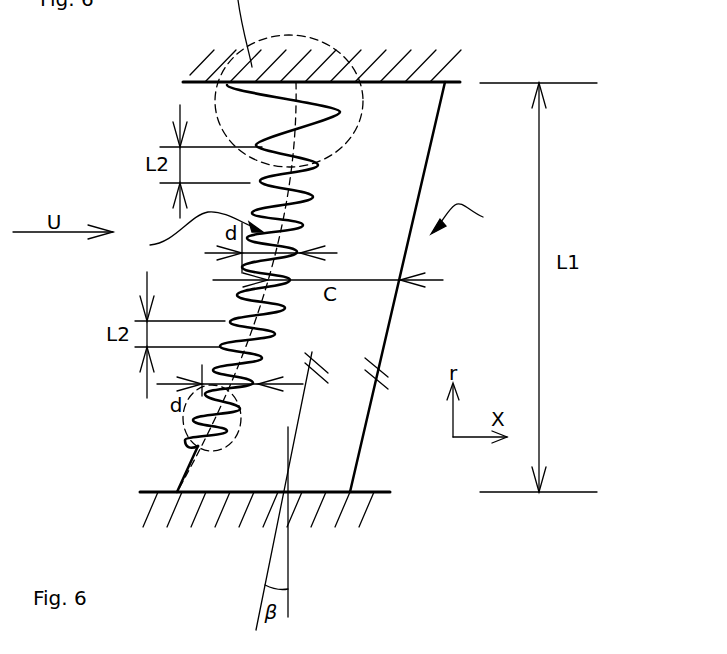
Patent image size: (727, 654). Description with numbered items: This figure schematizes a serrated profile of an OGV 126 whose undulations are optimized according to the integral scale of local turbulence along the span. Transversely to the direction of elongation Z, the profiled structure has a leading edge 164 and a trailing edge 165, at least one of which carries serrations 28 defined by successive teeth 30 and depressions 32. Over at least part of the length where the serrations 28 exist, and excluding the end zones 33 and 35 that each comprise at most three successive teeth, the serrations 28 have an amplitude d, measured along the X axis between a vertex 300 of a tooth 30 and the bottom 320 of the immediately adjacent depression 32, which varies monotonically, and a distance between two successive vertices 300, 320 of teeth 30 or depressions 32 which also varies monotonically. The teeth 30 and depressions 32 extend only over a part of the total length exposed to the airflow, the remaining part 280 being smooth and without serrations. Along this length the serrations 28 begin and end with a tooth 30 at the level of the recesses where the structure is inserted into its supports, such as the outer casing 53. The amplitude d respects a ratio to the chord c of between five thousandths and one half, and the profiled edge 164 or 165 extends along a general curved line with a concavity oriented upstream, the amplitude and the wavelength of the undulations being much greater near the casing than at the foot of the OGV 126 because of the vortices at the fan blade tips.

The serrations 28 is at (193, 235).
The teeth 30 is at (277, 147).
The depressions 32 is at (318, 113).
The end zone 33 is at (355, 126).
The end zone 35 is at (242, 420).
The outer casing 53 is at (227, 507).
The OGV 126 is at (476, 219).
The leading edge 164 is at (188, 447).
The trailing edge 165 is at (352, 473).
The smooth part 280 is at (185, 470).
The vertex of tooth 300 is at (256, 147).
The bottom of depression 320 is at (343, 113).